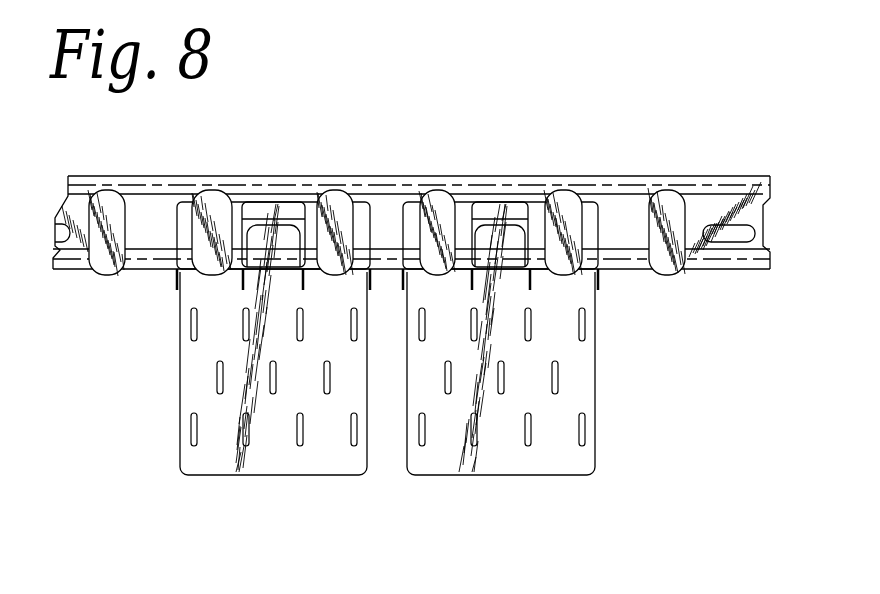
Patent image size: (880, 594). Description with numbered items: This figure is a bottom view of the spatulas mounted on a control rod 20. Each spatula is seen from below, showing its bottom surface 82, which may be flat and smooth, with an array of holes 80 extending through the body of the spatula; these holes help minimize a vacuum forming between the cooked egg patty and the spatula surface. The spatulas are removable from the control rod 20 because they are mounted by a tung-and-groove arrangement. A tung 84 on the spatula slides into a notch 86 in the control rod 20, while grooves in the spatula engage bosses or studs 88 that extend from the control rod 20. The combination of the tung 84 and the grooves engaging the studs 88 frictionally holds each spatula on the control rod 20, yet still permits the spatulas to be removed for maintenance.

The control rod 20 is at (770, 246).
The holes 80 is at (582, 327).
The bottom surface 82 is at (267, 448).
The tung 84 is at (263, 210).
The notch 86 is at (298, 207).
The bosses or studs 88 is at (224, 197).